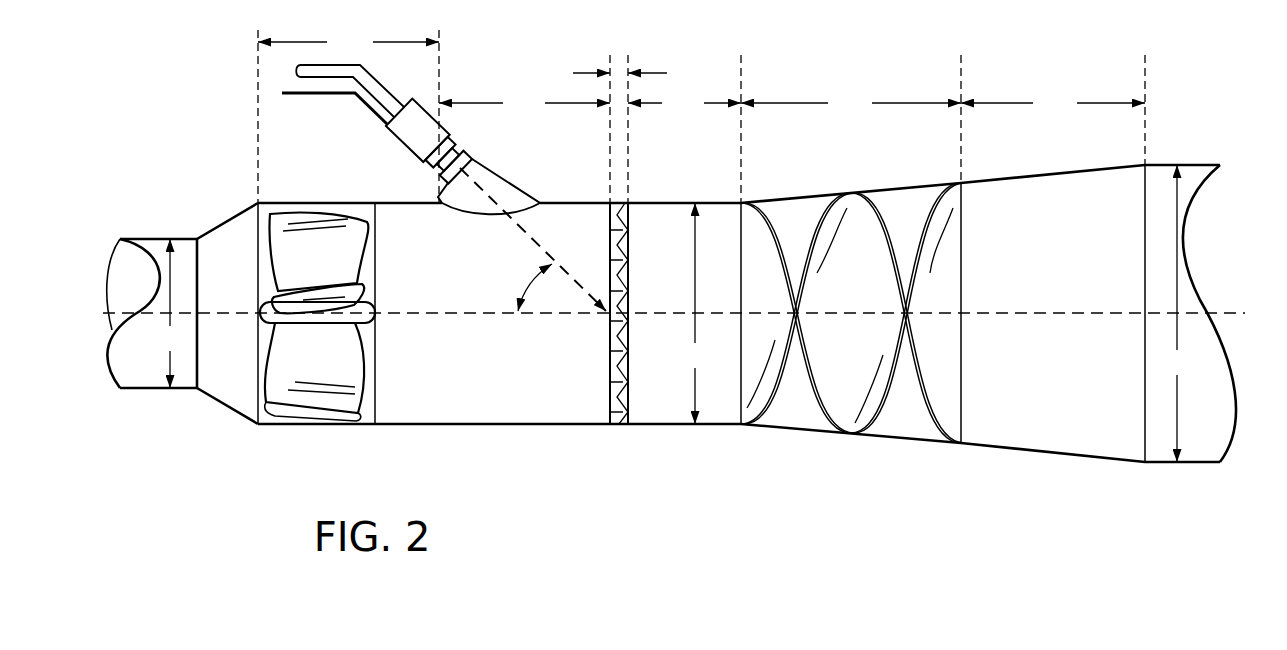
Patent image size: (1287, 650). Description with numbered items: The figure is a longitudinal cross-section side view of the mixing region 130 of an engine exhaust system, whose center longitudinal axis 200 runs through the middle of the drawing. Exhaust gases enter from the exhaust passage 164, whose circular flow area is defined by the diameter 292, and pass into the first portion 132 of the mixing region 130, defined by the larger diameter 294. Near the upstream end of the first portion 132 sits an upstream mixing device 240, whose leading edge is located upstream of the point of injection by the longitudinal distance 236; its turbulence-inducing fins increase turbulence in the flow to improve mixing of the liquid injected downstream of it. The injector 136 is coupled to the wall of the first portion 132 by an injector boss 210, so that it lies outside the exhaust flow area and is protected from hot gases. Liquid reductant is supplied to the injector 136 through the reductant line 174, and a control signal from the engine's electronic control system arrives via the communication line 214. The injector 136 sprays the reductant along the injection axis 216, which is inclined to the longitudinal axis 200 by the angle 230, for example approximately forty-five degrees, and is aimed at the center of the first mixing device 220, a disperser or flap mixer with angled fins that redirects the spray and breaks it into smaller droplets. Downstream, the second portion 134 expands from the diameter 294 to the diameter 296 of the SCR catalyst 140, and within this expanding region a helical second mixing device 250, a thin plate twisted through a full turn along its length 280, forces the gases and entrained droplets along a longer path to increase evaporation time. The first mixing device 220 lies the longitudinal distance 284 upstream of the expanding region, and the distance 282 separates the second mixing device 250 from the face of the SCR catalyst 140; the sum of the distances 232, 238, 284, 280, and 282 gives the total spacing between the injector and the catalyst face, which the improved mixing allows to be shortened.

The mixing region 130 is at (250, 482).
The first portion 132 is at (442, 424).
The second portion 134 is at (1000, 450).
The injector 136 is at (407, 137).
The SCR catalyst 140 is at (1158, 463).
The exhaust passage 164 is at (140, 390).
The reductant line 174 is at (365, 85).
The center longitudinal axis 200 is at (448, 315).
The injector boss 210 is at (497, 185).
The communication line 214 is at (335, 97).
The injection axis 216 is at (540, 240).
The first mixing device 220 is at (610, 382).
The angle 230 is at (541, 287).
The longitudinal distance 232 is at (524, 129).
The longitudinal distance 236 is at (348, 116).
The longitudinal distance 238 is at (638, 129).
The upstream mixing device 240 is at (295, 398).
The second mixing device 250 is at (830, 390).
The longitudinal length 280 is at (851, 119).
The longitudinal distance 282 is at (1053, 110).
The longitudinal distance 284 is at (684, 129).
The diameter 292 is at (170, 313).
The diameter 294 is at (695, 313).
The diameter 296 is at (1177, 313).